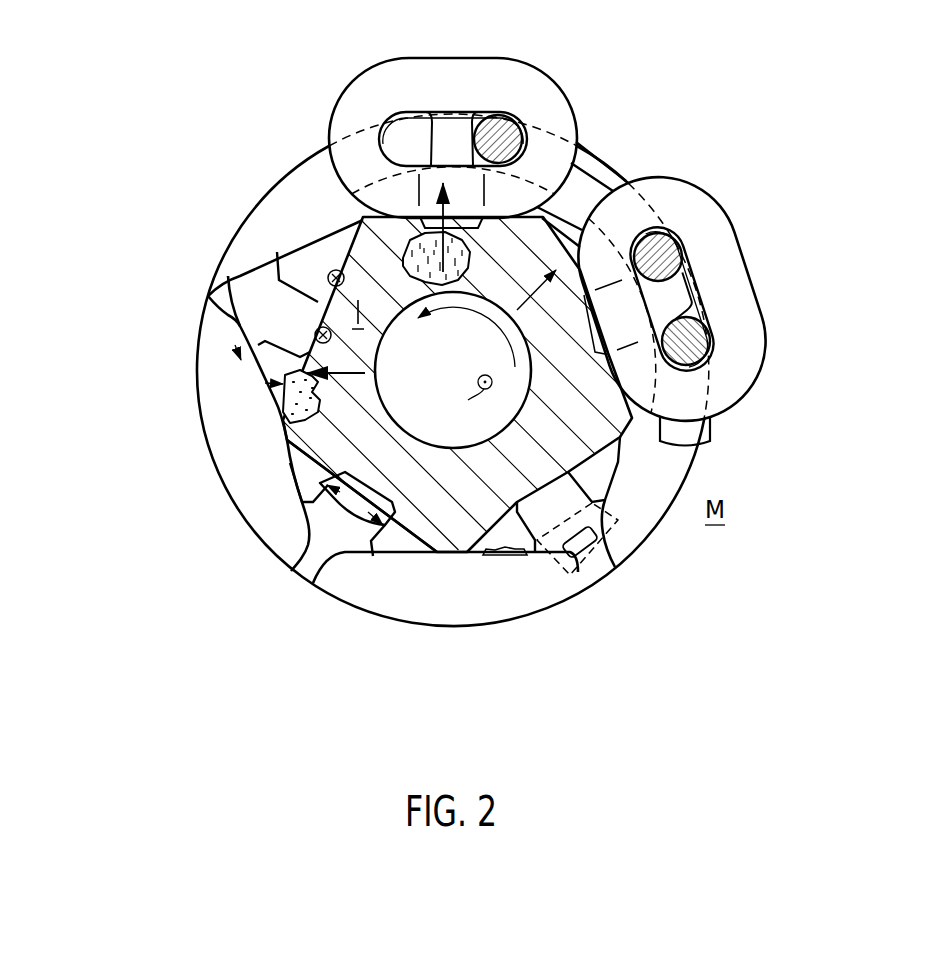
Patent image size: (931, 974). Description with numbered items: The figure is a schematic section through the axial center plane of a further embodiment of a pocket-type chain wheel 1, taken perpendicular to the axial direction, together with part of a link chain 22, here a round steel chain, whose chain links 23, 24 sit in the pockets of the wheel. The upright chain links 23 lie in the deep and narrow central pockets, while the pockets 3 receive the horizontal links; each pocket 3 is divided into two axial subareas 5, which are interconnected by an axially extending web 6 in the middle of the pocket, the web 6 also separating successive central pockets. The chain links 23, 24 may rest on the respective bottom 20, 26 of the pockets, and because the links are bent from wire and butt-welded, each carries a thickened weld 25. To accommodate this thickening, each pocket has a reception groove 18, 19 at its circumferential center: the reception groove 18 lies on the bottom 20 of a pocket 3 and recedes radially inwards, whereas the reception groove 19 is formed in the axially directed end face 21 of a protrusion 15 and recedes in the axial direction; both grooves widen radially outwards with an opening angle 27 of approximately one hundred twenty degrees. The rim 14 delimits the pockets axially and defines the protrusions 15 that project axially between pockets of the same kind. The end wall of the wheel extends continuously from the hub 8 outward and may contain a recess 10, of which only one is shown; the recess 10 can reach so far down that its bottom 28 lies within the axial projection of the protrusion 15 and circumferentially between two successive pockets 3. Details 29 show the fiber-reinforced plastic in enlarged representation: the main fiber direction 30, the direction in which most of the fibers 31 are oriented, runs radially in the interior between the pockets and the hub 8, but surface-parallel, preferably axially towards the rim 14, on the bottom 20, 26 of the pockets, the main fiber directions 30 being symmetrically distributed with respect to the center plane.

The pocket-type chain wheel 1 is at (152, 500).
The pocket 3 is at (299, 230).
The axial subarea 5 is at (222, 482).
The web 6 is at (455, 562).
The hub 8 is at (446, 385).
The recess 10 is at (614, 540).
The rim 14 is at (247, 222).
The protrusion 15 is at (272, 257).
The reception groove 18 is at (272, 428).
The reception groove 19 is at (233, 336).
The bottom 20 is at (292, 497).
The end face 21 is at (276, 331).
The link chain 22 is at (527, 57).
The upright chain link 23 is at (552, 96).
The chain link 24 is at (677, 227).
The thickened weld 25 is at (447, 170).
The bottom 26 is at (410, 532).
The opening angle 27 is at (235, 266).
The bottom 28 is at (584, 548).
The detail 29 is at (400, 260).
The main fiber direction 30 is at (458, 223).
The fiber 31 is at (523, 140).